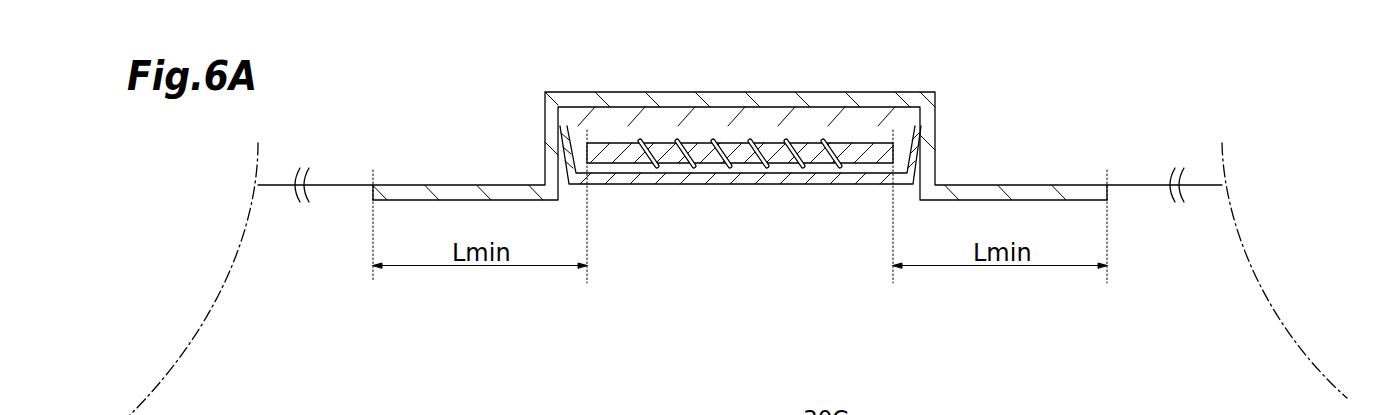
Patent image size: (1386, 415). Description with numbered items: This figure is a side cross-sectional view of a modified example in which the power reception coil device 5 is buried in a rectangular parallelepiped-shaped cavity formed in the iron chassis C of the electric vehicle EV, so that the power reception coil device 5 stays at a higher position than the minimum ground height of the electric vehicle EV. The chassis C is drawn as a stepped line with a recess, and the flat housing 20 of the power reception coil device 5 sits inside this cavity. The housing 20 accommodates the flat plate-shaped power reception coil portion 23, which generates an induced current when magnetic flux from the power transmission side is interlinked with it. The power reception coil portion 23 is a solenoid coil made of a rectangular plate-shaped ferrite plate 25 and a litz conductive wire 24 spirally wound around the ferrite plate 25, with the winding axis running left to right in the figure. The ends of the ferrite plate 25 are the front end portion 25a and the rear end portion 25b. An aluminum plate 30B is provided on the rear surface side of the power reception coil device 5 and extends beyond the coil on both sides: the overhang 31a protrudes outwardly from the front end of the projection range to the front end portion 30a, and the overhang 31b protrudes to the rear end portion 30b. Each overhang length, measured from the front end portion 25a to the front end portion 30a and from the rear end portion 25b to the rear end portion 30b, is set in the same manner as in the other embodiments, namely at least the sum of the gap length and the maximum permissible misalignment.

The aluminum plate 30B is at (788, 92).
The front end portion 30a is at (373, 193).
The rear end portion 30b is at (1120, 187).
The overhang 31a is at (422, 193).
The overhang 31b is at (1060, 190).
The housing 20 is at (833, 187).
The power reception coil portion 23 is at (740, 206).
The conductive wire 24 is at (727, 165).
The ferrite plate 25 is at (783, 167).
The front end portion 25a is at (564, 150).
The rear end portion 25b is at (914, 155).
The power reception coil device 5 is at (671, 203).
The chassis C is at (332, 190).
The electric vehicle EV is at (1210, 289).